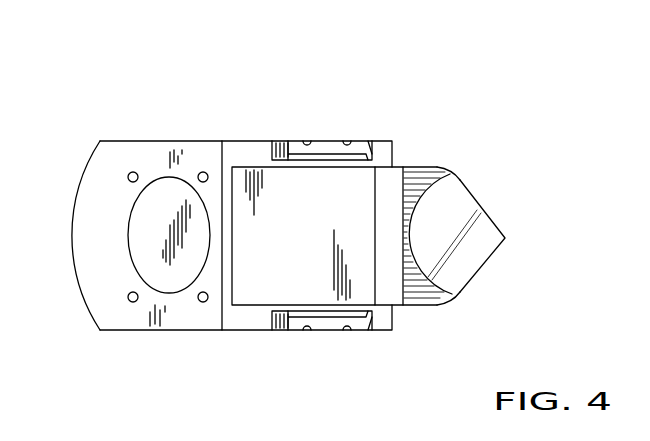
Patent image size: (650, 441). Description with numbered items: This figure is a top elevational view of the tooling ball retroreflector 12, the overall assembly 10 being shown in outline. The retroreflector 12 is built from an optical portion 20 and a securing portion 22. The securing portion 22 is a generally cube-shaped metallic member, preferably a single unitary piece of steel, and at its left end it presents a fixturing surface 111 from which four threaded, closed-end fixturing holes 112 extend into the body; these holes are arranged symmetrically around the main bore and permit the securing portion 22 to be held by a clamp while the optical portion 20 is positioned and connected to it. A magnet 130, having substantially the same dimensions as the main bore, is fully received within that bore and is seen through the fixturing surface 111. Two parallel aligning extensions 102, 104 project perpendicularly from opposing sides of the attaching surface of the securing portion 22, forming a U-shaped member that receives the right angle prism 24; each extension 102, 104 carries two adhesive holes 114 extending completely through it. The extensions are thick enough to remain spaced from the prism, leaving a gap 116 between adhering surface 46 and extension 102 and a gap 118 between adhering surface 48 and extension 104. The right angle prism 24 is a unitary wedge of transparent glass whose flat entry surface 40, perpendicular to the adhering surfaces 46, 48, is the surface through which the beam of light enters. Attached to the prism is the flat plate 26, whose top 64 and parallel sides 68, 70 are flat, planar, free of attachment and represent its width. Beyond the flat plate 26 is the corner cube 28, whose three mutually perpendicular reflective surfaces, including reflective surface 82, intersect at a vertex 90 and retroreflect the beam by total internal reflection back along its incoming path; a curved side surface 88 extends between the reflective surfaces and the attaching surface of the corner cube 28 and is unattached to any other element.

The lock assembly 10 is at (537, 86).
The tooling ball retroreflector 12 is at (118, 141).
The optical portion 20 is at (430, 168).
The securing portion 22 is at (118, 332).
The right angle prism 24 is at (243, 167).
The flat plate 26 is at (392, 290).
The corner cube 28 is at (483, 248).
The entry surface 40 is at (307, 265).
The adhering surface 46 is at (250, 333).
The adhering surface 48 is at (380, 143).
The top 64 is at (390, 255).
The side 68 is at (382, 308).
The side 70 is at (400, 167).
The reflective surface 82 is at (460, 200).
The side surface 88 is at (433, 307).
The vertex 90 is at (507, 237).
The aligning extension 102 is at (323, 330).
The aligning extension 104 is at (330, 143).
The fixturing surface 111 is at (143, 150).
The fixturing holes 112 is at (128, 177).
The adhesive holes 114 is at (307, 143).
The gap 116 is at (277, 312).
The gap 118 is at (277, 162).
The magnet 130 is at (143, 222).